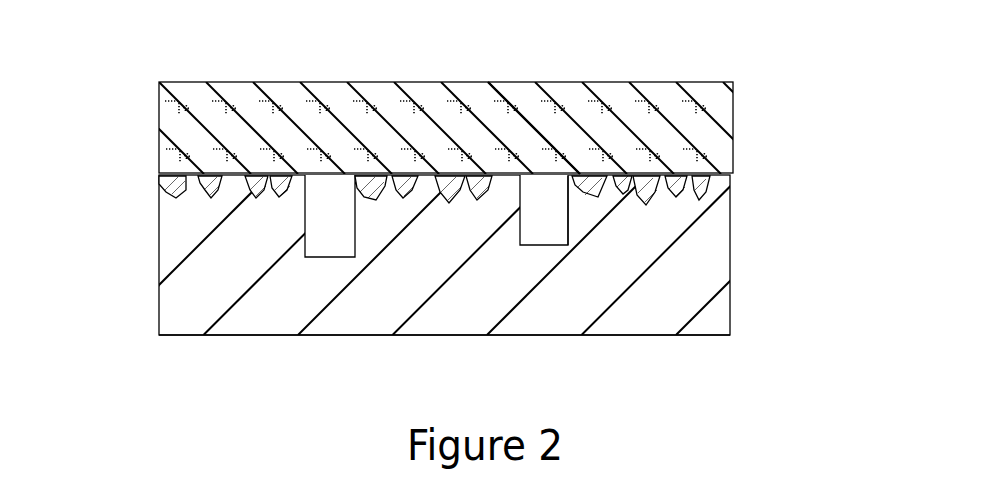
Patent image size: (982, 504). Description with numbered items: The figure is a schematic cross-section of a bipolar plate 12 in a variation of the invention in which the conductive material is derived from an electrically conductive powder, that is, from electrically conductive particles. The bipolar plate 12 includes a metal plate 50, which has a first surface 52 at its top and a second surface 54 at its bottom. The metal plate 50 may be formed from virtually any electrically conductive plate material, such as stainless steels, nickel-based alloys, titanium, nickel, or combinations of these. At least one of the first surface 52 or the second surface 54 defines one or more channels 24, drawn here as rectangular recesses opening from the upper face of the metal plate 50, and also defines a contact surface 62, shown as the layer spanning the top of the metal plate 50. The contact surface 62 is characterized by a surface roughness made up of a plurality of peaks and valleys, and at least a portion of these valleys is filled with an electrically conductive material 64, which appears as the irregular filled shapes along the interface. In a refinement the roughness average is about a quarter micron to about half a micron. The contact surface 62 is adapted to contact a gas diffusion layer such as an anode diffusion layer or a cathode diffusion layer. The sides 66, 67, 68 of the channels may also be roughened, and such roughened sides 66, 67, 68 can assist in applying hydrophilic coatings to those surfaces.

The bipolar plate 12 is at (435, 244).
The channel 24 is at (323, 232).
The metal plate 50 is at (272, 305).
The first surface 52 is at (178, 189).
The second surface 54 is at (563, 337).
The contact surface 62 is at (168, 178).
The electrically conductive material 64 is at (698, 183).
The side 66 is at (523, 195).
The side 67 is at (537, 243).
The side 68 is at (568, 212).